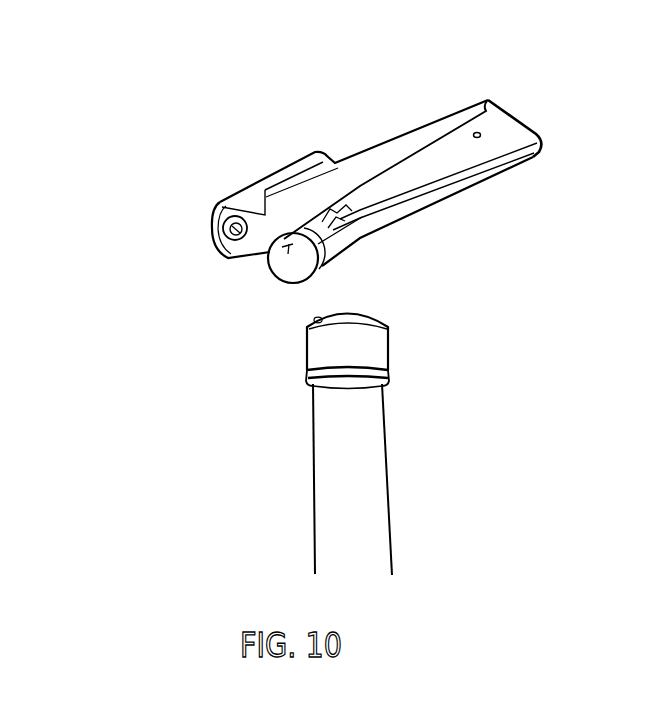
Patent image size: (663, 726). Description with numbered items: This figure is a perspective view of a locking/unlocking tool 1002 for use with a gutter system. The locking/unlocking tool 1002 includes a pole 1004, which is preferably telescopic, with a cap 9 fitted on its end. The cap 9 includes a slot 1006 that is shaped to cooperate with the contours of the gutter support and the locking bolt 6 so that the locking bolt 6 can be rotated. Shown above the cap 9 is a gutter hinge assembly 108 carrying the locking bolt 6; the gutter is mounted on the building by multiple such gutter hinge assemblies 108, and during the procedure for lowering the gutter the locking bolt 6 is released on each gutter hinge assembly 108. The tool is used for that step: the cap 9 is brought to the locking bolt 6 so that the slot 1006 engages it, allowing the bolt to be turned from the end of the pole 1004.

The gutter hinge assembly 108 is at (377, 161).
The locking bolt 6 is at (347, 207).
The slot 1006 is at (222, 321).
The cap 9 is at (332, 347).
The locking/unlocking tool 1002 is at (279, 414).
The pole 1004 is at (332, 460).